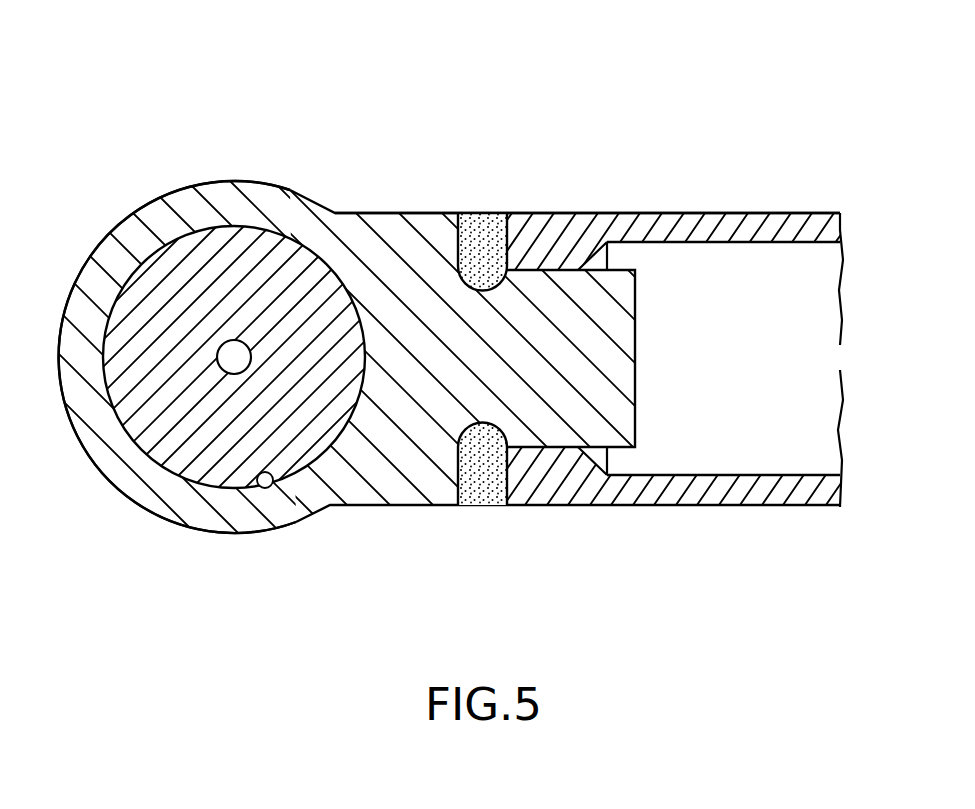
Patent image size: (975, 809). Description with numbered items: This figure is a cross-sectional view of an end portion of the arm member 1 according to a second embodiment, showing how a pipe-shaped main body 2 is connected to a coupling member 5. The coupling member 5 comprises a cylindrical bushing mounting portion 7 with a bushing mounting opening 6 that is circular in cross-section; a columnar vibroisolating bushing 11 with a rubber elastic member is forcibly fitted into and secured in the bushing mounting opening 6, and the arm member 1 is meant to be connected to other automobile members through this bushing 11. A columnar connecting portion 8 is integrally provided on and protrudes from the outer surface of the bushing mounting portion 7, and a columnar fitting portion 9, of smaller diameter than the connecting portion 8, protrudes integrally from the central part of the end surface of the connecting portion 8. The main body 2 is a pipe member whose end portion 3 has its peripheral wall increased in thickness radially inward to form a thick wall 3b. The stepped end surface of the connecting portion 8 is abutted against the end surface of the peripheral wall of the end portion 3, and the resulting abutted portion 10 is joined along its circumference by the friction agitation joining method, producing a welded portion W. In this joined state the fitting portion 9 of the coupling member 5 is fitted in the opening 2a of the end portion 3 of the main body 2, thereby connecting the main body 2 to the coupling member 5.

The arm member 1 is at (580, 117).
The main body 2 is at (772, 212).
The opening 2a is at (718, 442).
The end portion 3 is at (542, 212).
The thick wall 3b is at (549, 255).
The coupling member 5 is at (223, 180).
The bushing mounting opening 6 is at (274, 483).
The bushing mounting portion 7 is at (152, 220).
The connecting portion 8 is at (397, 245).
The fitting portion 9 is at (612, 365).
The abutted portion 10 is at (481, 258).
The vibroisolating bushing 11 is at (199, 423).
The welded portion W is at (457, 253).